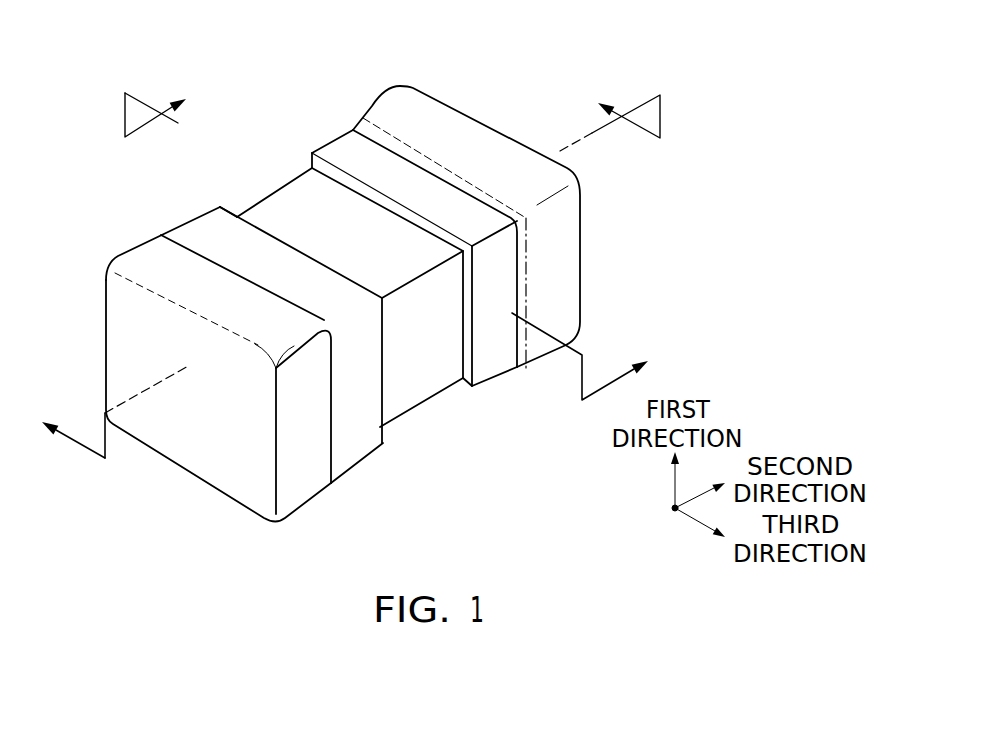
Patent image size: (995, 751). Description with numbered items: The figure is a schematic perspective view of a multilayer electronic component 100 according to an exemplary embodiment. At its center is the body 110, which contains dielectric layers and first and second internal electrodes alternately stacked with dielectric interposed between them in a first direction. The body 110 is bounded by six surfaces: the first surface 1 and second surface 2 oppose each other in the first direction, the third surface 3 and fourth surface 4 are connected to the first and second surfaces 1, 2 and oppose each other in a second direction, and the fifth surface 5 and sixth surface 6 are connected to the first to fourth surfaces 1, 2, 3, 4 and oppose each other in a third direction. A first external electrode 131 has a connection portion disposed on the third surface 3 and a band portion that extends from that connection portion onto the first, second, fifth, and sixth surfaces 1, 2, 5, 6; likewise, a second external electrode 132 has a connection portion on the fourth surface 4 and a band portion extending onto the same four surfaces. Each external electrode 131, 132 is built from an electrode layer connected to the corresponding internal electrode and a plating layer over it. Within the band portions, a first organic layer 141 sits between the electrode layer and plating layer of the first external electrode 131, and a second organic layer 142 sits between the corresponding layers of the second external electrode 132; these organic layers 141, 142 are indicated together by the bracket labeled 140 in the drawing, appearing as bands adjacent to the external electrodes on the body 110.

The multilayer electronic component 100 is at (195, 24).
The body 110 is at (300, 193).
The first external electrode 131 is at (143, 253).
The second external electrode 132 is at (388, 110).
The insulating layer 140 is at (541, 444).
The first organic layer 141 is at (370, 402).
The second organic layer 142 is at (478, 372).
The first surface 1 is at (362, 445).
The second surface 2 is at (344, 147).
The third surface 3 is at (193, 460).
The fourth surface 4 is at (565, 239).
The fifth surface 5 is at (272, 208).
The sixth surface 6 is at (455, 349).